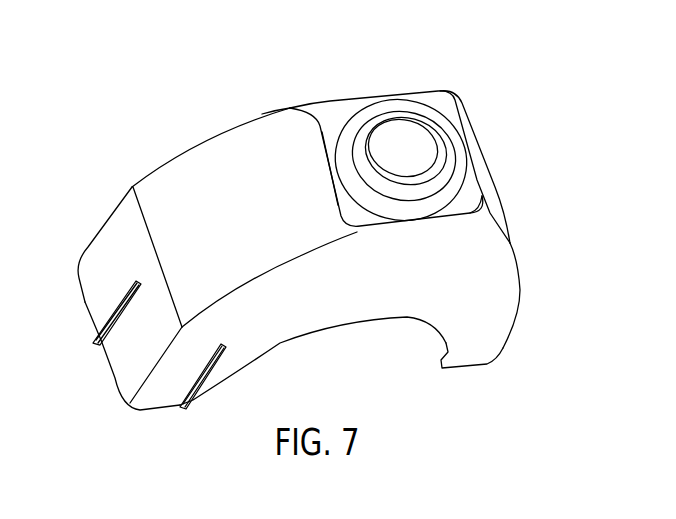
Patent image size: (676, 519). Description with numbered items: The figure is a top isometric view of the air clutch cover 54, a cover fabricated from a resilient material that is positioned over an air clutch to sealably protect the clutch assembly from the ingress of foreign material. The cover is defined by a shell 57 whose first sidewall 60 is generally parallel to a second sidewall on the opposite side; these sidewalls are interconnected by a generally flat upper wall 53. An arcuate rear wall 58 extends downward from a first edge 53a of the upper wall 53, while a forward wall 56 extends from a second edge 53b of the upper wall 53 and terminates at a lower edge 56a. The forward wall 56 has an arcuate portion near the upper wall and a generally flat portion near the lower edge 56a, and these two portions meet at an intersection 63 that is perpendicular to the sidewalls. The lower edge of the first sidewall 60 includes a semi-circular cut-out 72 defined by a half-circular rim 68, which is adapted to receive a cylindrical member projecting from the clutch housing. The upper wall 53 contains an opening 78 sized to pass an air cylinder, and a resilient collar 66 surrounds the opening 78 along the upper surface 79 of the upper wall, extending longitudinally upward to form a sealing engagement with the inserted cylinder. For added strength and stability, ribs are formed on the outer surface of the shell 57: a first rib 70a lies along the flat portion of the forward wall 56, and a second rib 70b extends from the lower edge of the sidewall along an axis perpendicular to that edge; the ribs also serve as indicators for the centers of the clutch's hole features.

The upper wall 53 is at (358, 233).
The first edge of upper wall 53a is at (482, 158).
The second edge of upper wall 53b is at (330, 178).
The air clutch cover 54 is at (200, 87).
The forward wall 56 is at (178, 181).
The lower edge of forward wall 56a is at (100, 285).
The shell 57 is at (273, 109).
The rear wall 58 is at (500, 210).
The first sidewall 60 is at (385, 287).
The intersection 63 is at (117, 205).
The resilient collar 66 is at (443, 127).
The half-circular rim 68 is at (330, 327).
The first rib 70a is at (98, 337).
The second rib 70b is at (185, 408).
The semi-circular cut-out 72 is at (390, 360).
The opening 78 is at (403, 147).
The upper surface 79 is at (463, 212).